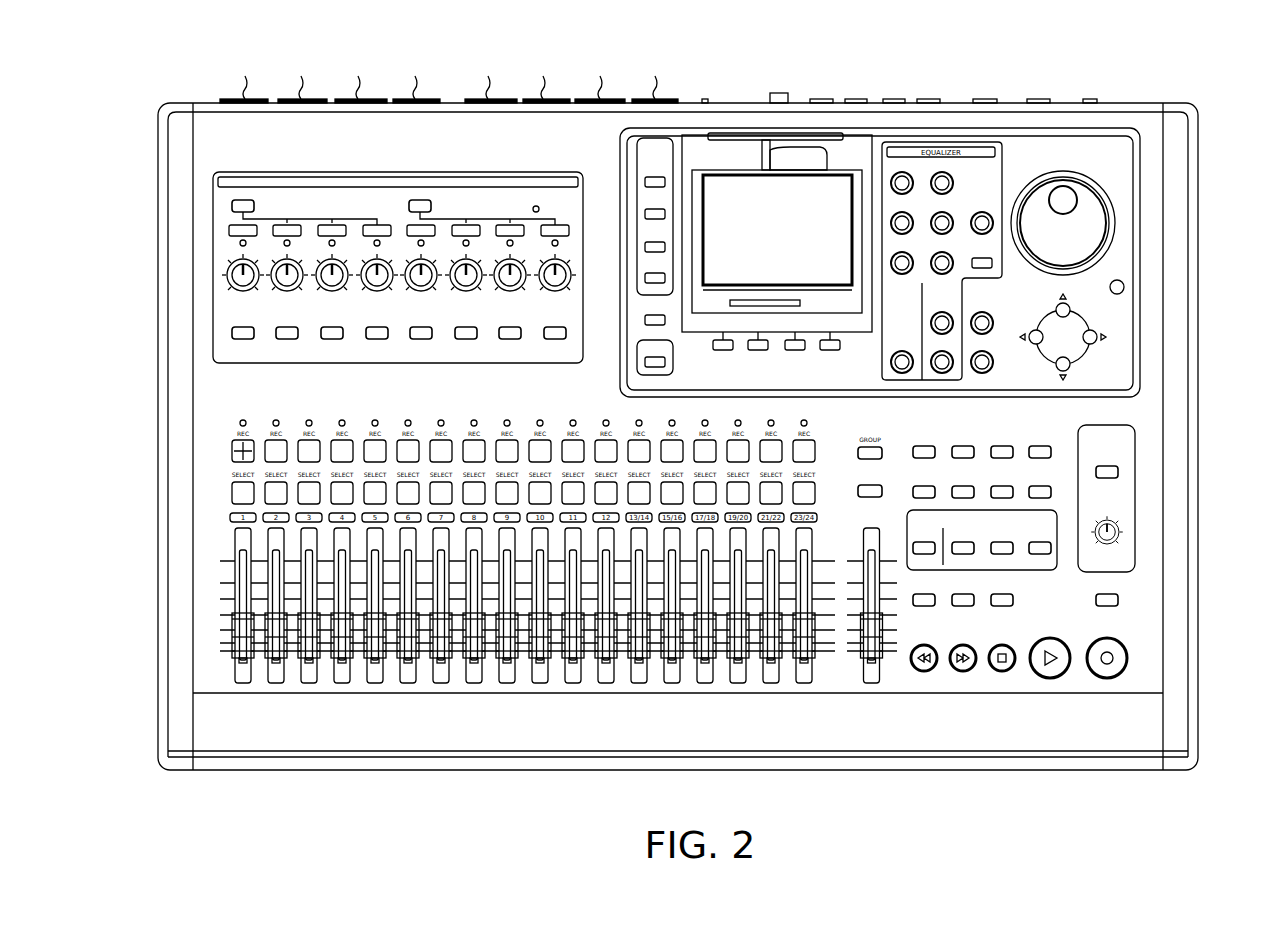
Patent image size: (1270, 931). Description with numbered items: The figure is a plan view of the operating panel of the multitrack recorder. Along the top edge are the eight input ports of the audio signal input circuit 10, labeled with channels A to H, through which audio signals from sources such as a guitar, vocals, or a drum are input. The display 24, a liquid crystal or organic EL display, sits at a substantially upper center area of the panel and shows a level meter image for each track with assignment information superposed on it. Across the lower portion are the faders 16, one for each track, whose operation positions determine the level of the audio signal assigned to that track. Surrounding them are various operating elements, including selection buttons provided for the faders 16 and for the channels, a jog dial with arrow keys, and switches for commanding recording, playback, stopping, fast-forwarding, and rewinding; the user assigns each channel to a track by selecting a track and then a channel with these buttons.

The audio signal input circuit 10 is at (688, 57).
The display 24 is at (765, 243).
The faders 16 is at (222, 667).